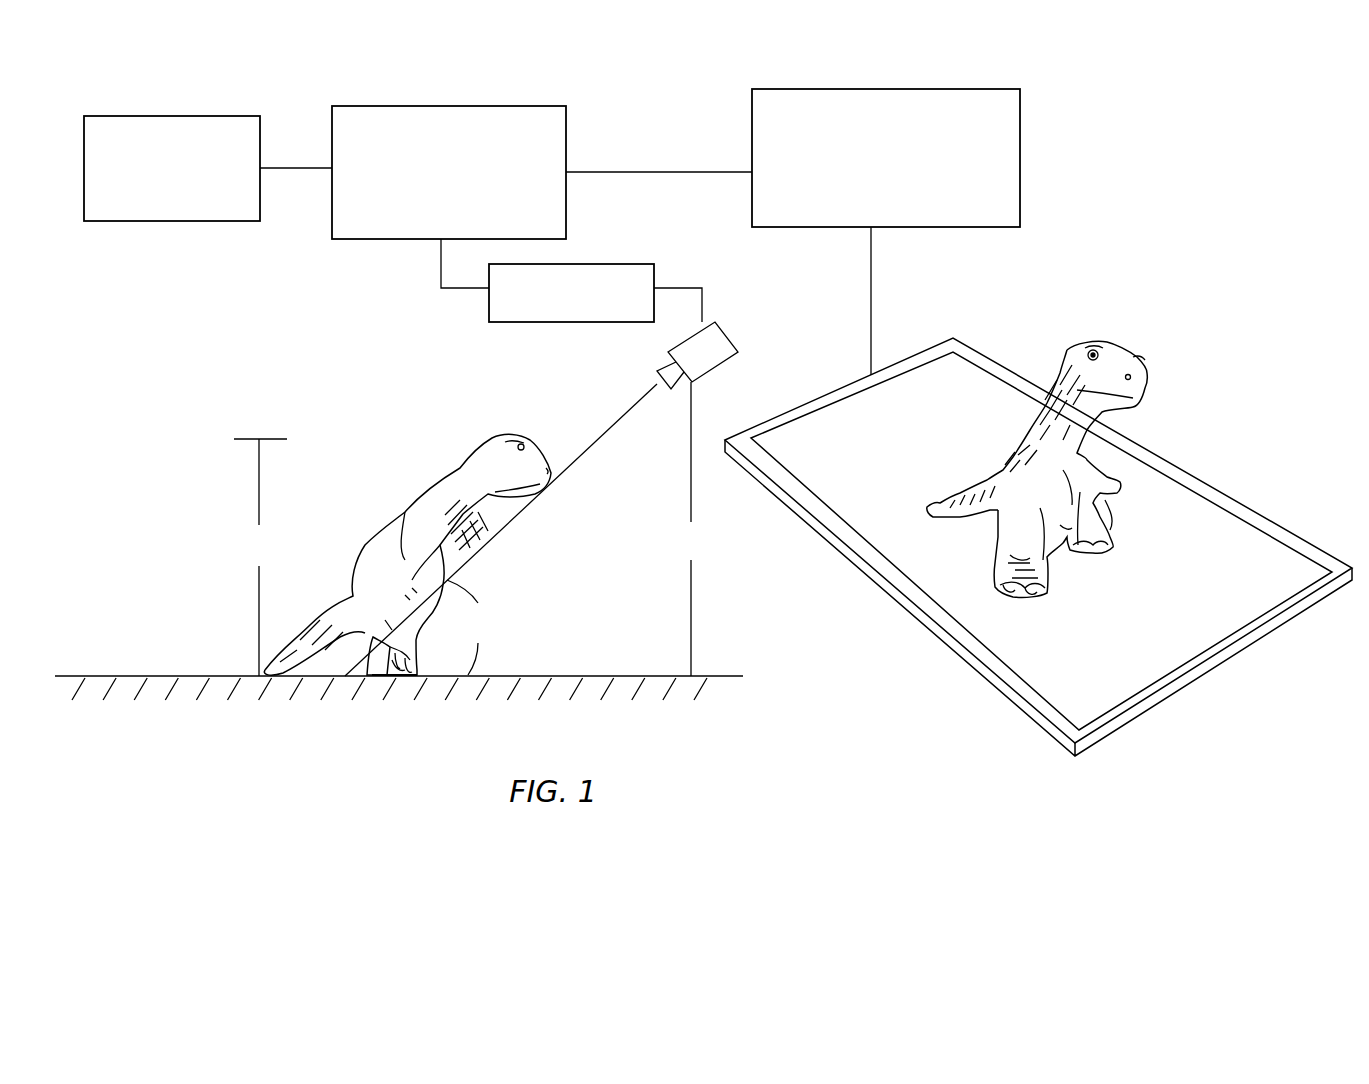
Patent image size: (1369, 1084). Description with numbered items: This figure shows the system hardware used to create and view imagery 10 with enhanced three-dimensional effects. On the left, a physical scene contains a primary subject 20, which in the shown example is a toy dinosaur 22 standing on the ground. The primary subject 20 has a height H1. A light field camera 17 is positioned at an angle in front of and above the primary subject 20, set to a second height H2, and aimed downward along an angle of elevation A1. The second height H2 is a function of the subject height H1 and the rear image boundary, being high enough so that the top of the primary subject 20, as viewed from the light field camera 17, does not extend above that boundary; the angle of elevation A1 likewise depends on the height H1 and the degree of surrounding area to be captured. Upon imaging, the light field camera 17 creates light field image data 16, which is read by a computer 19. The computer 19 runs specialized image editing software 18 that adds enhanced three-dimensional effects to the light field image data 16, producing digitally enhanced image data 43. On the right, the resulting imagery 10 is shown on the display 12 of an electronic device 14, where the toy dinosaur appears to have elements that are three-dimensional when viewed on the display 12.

The imagery 10 is at (705, 473).
The display 12 is at (912, 558).
The electronic device 14 is at (1038, 547).
The light field image data 16 is at (607, 263).
The light field camera 17 is at (727, 334).
The image editing software 18 is at (226, 222).
The computer 19 is at (567, 135).
The primary subject 20 is at (405, 517).
The toy dinosaur 22 is at (445, 498).
The digitally enhanced image data 43 is at (752, 149).
The height of the primary subject H1 is at (260, 557).
The second height H2 is at (686, 529).
The angle of elevation A1 is at (470, 627).